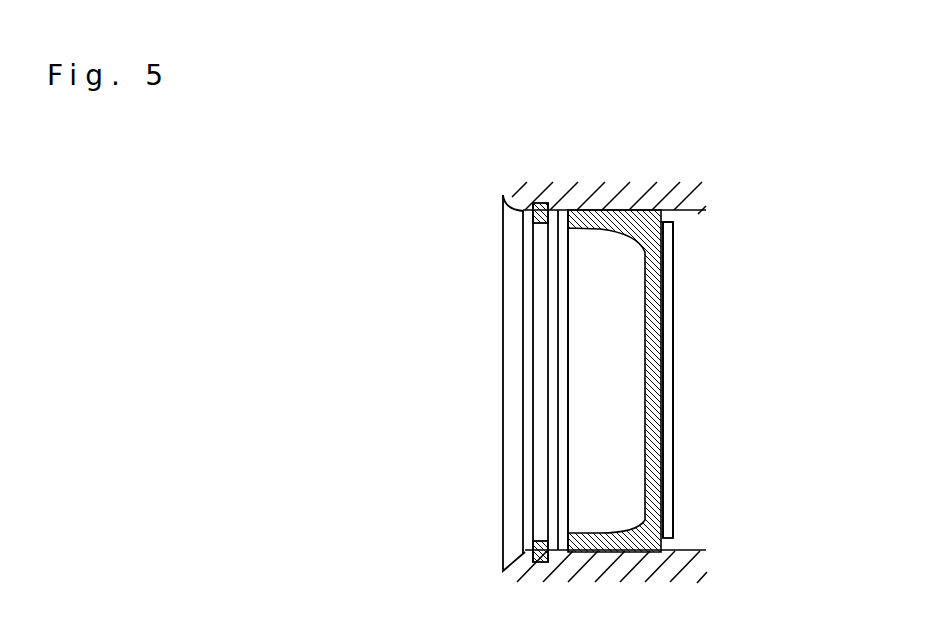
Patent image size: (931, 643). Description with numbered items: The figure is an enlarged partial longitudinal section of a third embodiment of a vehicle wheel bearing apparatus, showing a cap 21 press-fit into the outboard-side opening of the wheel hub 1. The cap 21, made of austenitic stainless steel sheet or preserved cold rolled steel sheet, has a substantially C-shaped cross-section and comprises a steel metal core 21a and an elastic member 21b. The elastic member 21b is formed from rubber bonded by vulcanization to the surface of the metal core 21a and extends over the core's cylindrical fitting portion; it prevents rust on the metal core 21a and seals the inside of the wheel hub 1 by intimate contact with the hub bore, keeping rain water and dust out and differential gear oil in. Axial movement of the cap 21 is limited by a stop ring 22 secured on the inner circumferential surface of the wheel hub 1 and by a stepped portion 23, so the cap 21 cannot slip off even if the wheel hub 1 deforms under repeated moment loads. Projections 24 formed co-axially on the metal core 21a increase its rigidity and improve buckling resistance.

The wheel hub 1 is at (628, 193).
The stop ring 22 is at (526, 214).
The stepped portion 23 is at (673, 222).
The projections 24 is at (663, 320).
The cap 21 is at (800, 368).
The metal core 21a is at (663, 358).
The elastic member 21b is at (663, 407).